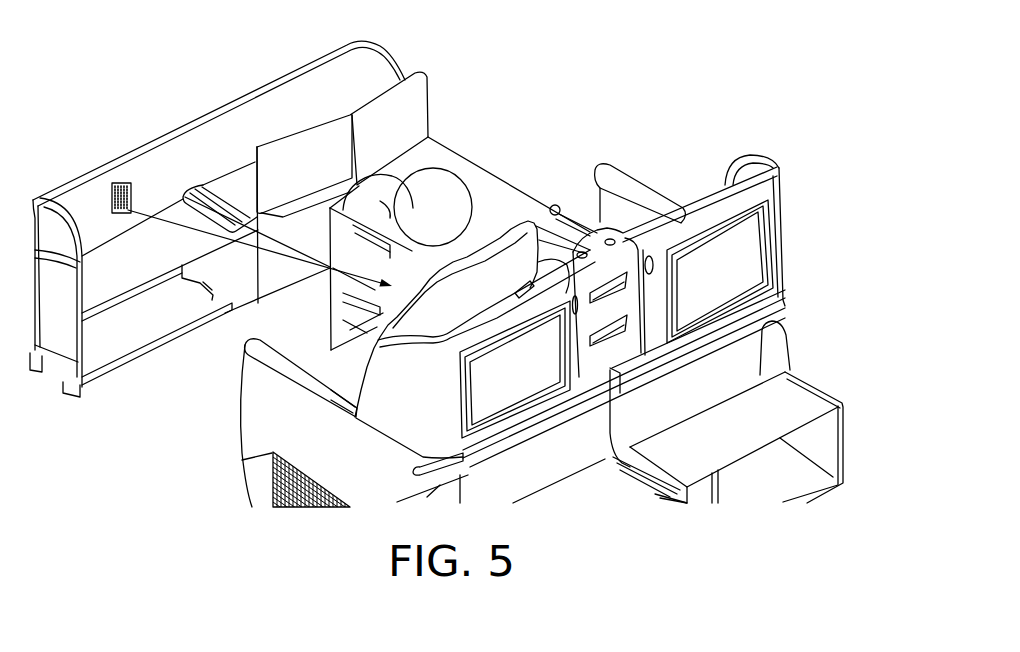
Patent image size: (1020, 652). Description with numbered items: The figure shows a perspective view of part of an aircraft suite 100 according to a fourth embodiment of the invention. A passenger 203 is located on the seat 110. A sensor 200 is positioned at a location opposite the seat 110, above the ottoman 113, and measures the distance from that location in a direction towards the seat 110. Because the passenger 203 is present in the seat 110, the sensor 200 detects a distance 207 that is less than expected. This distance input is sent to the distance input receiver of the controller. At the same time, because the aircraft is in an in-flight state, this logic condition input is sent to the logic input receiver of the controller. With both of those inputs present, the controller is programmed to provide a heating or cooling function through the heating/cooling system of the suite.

The aircraft suite 100 is at (690, 66).
The seat 110 is at (490, 298).
The ottoman 113 is at (107, 270).
The sensor 200 is at (125, 198).
The passenger 203 is at (447, 193).
The distance 207 is at (258, 210).